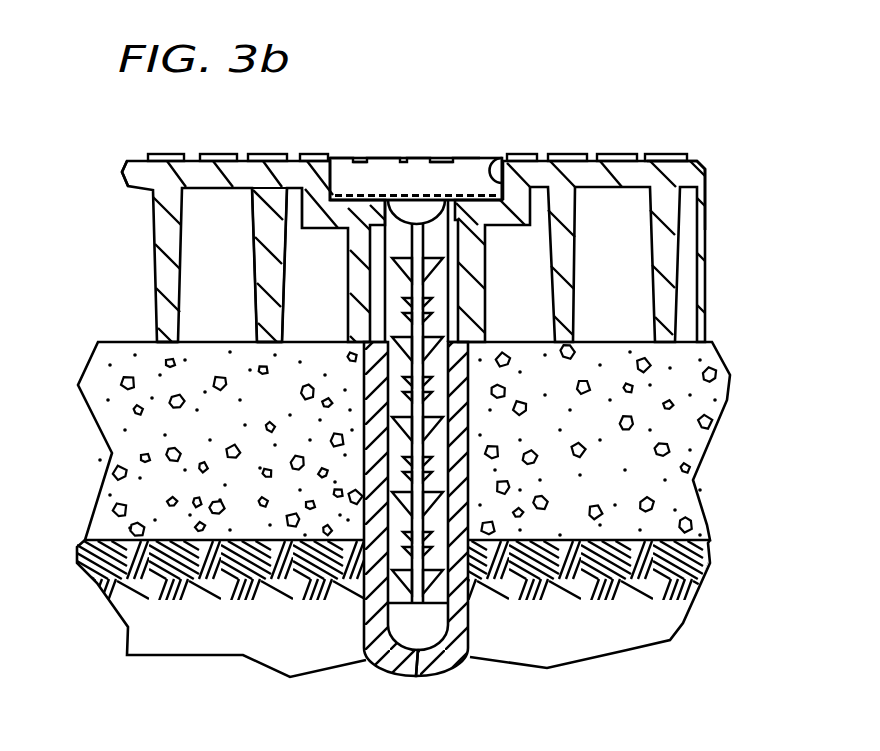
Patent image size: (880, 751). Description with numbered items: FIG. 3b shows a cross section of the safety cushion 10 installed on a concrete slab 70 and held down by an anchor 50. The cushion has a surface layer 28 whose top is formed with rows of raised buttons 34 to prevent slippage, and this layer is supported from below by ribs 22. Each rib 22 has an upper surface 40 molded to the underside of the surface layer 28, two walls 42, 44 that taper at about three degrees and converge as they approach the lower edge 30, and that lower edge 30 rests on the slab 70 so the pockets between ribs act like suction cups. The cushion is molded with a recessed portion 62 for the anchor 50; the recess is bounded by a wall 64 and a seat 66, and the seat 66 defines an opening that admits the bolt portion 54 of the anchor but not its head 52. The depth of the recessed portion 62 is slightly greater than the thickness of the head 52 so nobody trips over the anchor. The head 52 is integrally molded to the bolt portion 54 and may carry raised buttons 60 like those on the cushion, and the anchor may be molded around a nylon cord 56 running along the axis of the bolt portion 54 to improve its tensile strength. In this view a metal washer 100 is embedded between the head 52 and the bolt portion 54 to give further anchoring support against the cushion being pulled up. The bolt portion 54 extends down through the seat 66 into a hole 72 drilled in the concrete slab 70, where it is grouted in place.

The safety cushion 10 is at (690, 140).
The rib 22 is at (157, 253).
The surface layer 28 is at (122, 177).
The lower edge 30 is at (180, 338).
The raised buttons 34 is at (213, 153).
The upper surface 40 is at (244, 198).
The wall 42 is at (252, 268).
The wall 44 is at (287, 265).
The anchor 50 is at (461, 146).
The head 52 is at (341, 172).
The bolt portion 54 is at (438, 298).
The nylon cord 56 is at (417, 237).
The raised buttons 60 is at (380, 155).
The recessed portion 62 is at (512, 177).
The wall 64 is at (488, 172).
The seat 66 is at (346, 178).
The concrete slab 70 is at (728, 392).
The hole 72 is at (457, 363).
The metal washer 100 is at (414, 191).